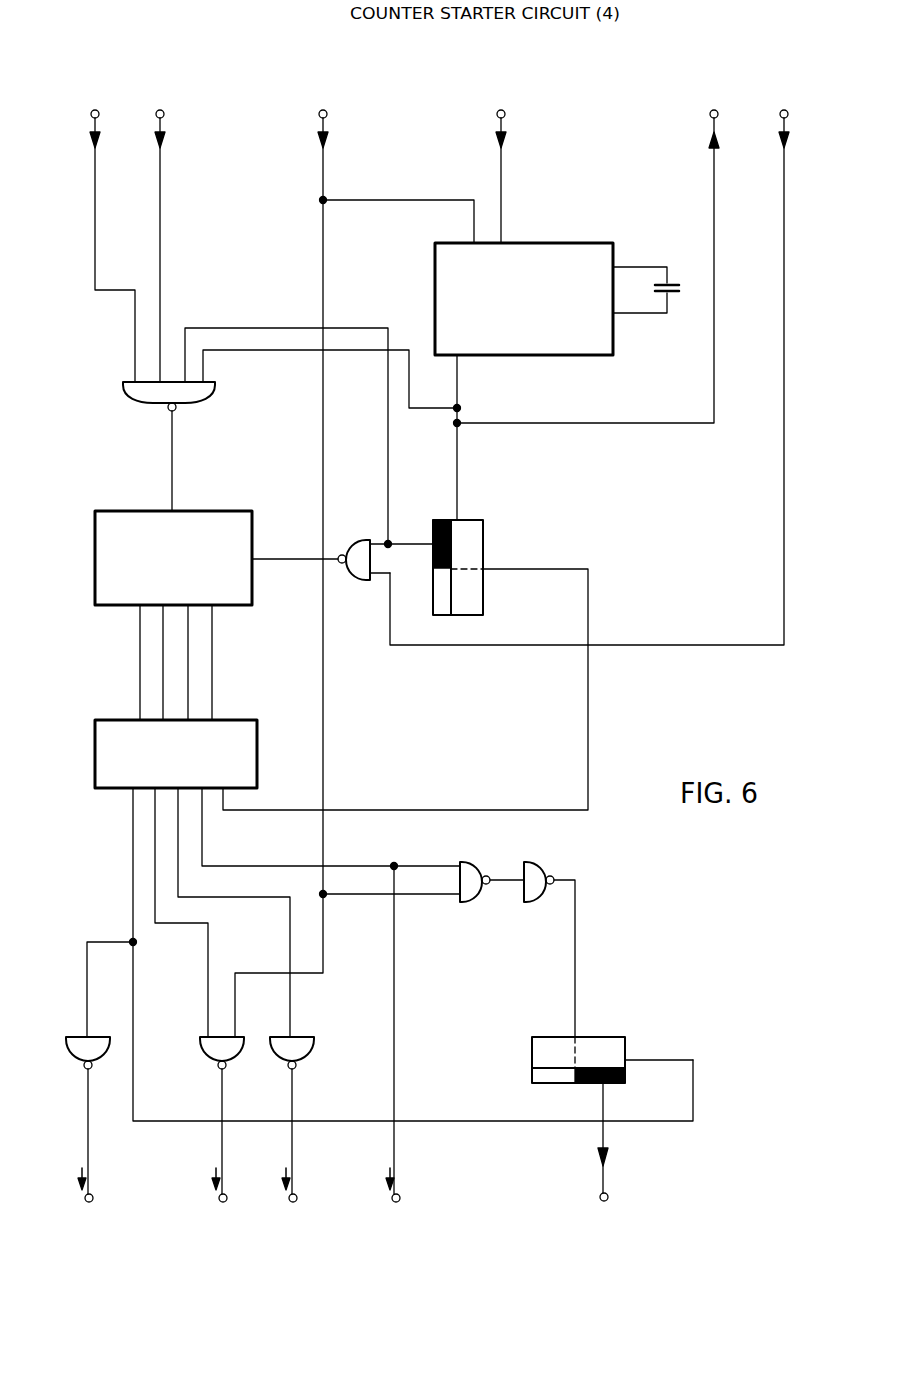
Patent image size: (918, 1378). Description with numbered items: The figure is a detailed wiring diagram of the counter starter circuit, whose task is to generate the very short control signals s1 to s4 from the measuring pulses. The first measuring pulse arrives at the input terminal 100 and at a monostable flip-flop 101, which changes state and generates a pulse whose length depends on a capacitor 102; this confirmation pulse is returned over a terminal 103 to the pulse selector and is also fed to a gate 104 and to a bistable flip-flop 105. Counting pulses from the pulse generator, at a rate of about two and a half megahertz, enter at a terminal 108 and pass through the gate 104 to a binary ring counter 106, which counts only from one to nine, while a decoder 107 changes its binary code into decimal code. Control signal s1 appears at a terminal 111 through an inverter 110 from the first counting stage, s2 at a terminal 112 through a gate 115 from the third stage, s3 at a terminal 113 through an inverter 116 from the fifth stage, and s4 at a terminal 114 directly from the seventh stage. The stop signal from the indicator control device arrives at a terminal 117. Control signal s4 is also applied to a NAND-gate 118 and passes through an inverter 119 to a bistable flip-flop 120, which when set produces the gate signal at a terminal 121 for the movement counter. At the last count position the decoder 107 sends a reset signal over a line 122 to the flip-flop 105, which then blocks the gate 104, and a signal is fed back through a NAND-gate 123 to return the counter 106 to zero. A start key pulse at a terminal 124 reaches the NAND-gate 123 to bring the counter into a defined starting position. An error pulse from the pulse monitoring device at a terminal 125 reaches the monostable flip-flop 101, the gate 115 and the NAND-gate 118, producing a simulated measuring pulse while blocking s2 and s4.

The input terminal 100 is at (513, 151).
The monostable flip-flop 101 is at (583, 257).
The capacitor 102 is at (668, 280).
The terminal 103 is at (608, 236).
The gate 104 is at (204, 390).
The bistable flip-flop 105 is at (478, 535).
The binary ring counter 106 is at (239, 522).
The decoder 107 is at (242, 722).
The terminal 108 is at (104, 210).
The inverter 110 is at (106, 1050).
The terminal 111 is at (97, 1150).
The terminal 112 is at (237, 1150).
The terminal 113 is at (310, 1150).
The terminal 114 is at (407, 1048).
The gate 115 is at (215, 1045).
The inverter 116 is at (281, 1045).
The terminal 117 is at (202, 205).
The NAND-gate 118 is at (465, 872).
The inverter 119 is at (530, 872).
The bistable flip-flop 120 is at (545, 1050).
The terminal 121 is at (653, 1166).
The line 122 is at (465, 810).
The NAND-gate 123 is at (366, 535).
The terminal 124 is at (617, 351).
The terminal 125 is at (354, 548).